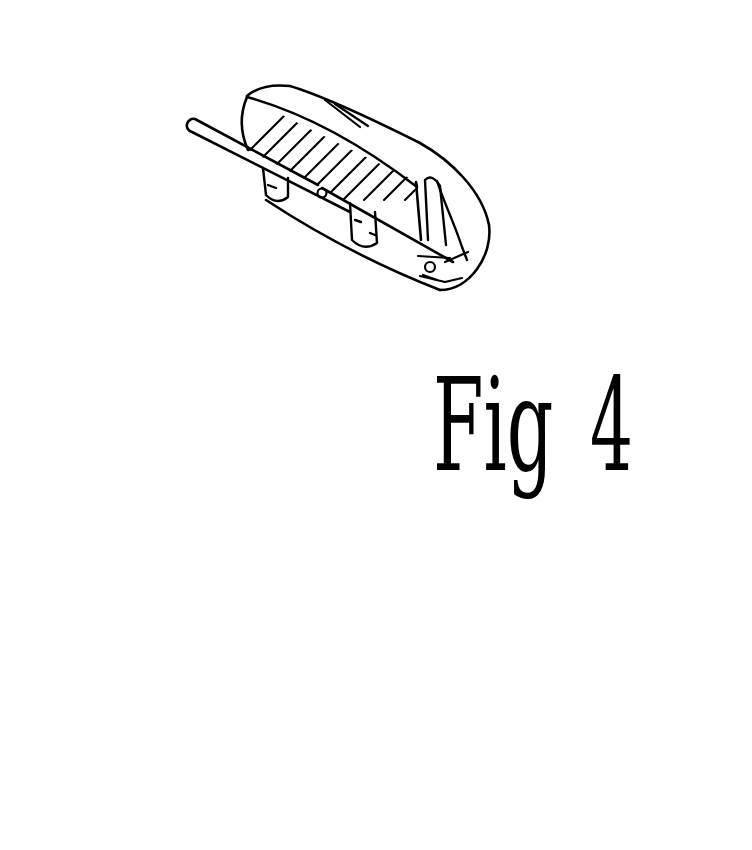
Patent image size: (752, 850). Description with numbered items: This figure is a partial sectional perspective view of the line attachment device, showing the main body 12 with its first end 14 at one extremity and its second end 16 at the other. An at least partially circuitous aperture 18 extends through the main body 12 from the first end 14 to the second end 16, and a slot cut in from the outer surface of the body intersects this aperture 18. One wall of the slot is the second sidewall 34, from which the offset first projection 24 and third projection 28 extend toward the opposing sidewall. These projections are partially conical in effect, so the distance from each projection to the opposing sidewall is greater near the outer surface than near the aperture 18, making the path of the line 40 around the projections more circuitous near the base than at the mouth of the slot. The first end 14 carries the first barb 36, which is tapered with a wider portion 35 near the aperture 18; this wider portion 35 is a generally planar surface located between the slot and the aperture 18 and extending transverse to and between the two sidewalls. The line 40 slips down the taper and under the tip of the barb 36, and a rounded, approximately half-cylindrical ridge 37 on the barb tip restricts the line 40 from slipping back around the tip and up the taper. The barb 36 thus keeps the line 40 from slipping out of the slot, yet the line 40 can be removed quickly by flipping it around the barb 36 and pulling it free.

The main body 12 is at (373, 128).
The first end 14 is at (474, 213).
The second end 16 is at (280, 95).
The aperture 18 is at (400, 268).
The first projection 24 is at (263, 192).
The third projection 28 is at (350, 237).
The second sidewall 34 is at (323, 220).
The wider portion of the barb 35 is at (440, 262).
The first barb 36 is at (455, 271).
The ridge 37 is at (423, 268).
The line 40 is at (207, 137).